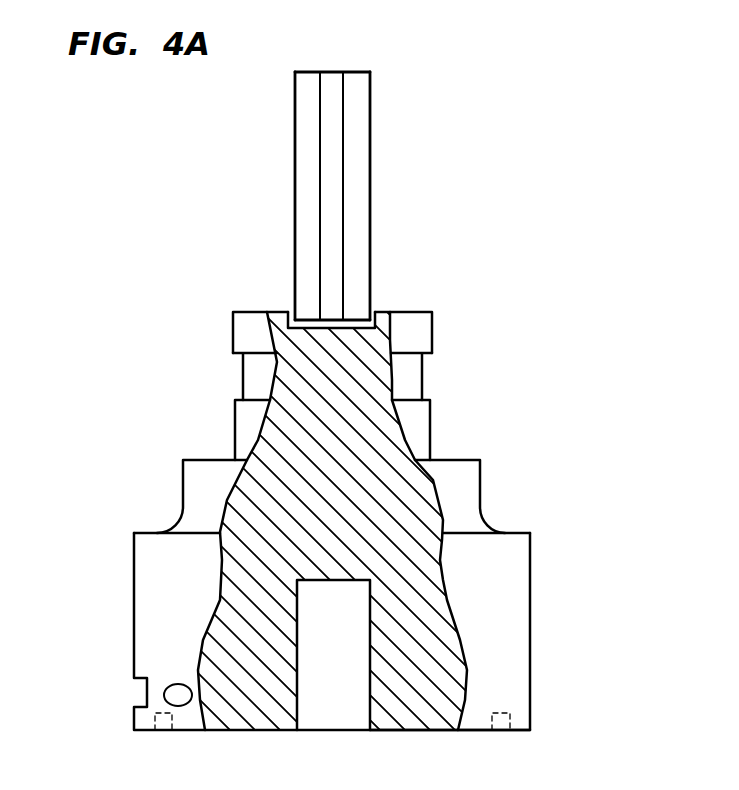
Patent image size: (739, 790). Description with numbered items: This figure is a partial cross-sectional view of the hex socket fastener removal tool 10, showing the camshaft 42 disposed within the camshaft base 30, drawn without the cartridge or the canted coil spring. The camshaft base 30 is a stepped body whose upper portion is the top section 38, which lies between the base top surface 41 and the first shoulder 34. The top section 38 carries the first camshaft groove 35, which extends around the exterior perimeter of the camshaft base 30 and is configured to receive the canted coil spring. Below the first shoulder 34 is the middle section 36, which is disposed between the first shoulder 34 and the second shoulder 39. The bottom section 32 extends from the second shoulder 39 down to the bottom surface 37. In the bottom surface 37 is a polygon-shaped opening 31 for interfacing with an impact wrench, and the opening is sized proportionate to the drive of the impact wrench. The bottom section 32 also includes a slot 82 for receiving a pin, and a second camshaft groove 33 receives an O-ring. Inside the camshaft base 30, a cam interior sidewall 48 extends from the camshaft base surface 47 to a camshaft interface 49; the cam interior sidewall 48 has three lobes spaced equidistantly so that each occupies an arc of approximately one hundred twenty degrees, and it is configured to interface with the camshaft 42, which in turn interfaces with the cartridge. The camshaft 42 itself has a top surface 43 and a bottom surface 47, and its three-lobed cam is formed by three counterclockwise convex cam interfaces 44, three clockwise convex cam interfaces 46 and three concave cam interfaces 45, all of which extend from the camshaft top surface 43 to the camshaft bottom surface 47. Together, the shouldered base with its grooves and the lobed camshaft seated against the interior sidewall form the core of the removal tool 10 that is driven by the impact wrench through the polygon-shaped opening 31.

The tool assembly 10 is at (195, 128).
The camshaft base 30 is at (96, 313).
The polygon-shaped opening 31 is at (368, 628).
The bottom section 32 is at (587, 532).
The second camshaft groove 33 is at (503, 731).
The first shoulder 34 is at (453, 460).
The first camshaft groove 35 is at (423, 383).
The middle section 36 is at (481, 482).
The bottom surface 37 is at (477, 731).
The top section 38 is at (587, 293).
The second shoulder 39 is at (518, 532).
The base top surface 41 is at (432, 306).
The camshaft 42 is at (233, 73).
The camshaft top surface 43 is at (333, 72).
The counterclockwise convex cam interface 44 is at (370, 125).
The concave cam interface 45 is at (335, 185).
The clockwise convex cam interface 46 is at (295, 115).
The camshaft bottom surface 47 is at (345, 318).
The cam interior sidewall 48 is at (288, 312).
The camshaft interface 49 is at (305, 362).
The slot 82 is at (180, 708).